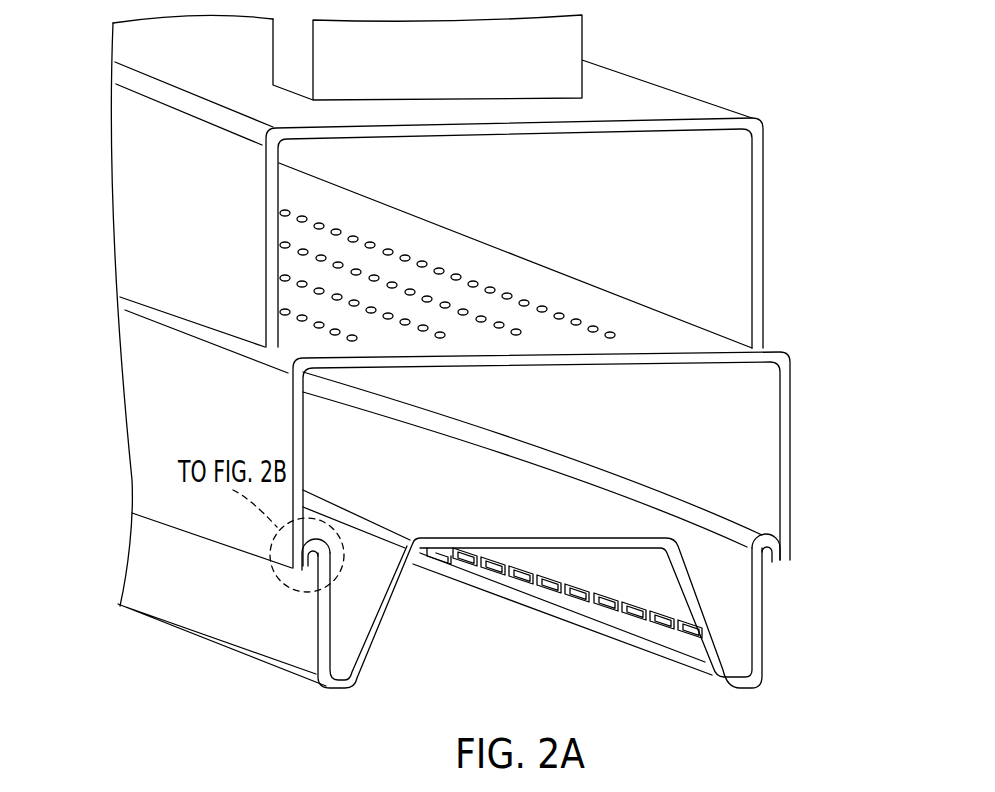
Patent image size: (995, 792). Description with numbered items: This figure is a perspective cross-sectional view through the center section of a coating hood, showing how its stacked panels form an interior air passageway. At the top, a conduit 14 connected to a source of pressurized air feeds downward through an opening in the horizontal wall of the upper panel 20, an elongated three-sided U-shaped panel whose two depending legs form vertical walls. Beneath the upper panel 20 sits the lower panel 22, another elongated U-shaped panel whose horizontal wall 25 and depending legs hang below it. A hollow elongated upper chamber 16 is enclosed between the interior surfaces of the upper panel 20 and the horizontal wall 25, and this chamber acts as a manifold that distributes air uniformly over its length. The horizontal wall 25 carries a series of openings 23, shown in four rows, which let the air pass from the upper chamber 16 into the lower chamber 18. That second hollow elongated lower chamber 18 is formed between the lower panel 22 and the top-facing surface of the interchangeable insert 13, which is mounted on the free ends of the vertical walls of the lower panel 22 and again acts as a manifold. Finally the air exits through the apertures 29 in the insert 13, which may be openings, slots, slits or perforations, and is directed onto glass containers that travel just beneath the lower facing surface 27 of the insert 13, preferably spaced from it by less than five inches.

The interchangeable insert 13 is at (158, 574).
The conduit 14 is at (563, 49).
The upper chamber 16 is at (722, 217).
The lower chamber 18 is at (755, 452).
The upper panel 20 is at (142, 202).
The lower panel 22 is at (153, 420).
The openings 23 is at (355, 305).
The horizontal wall 25 is at (672, 335).
The lower facing surface 27 is at (595, 572).
The apertures 29 is at (667, 635).